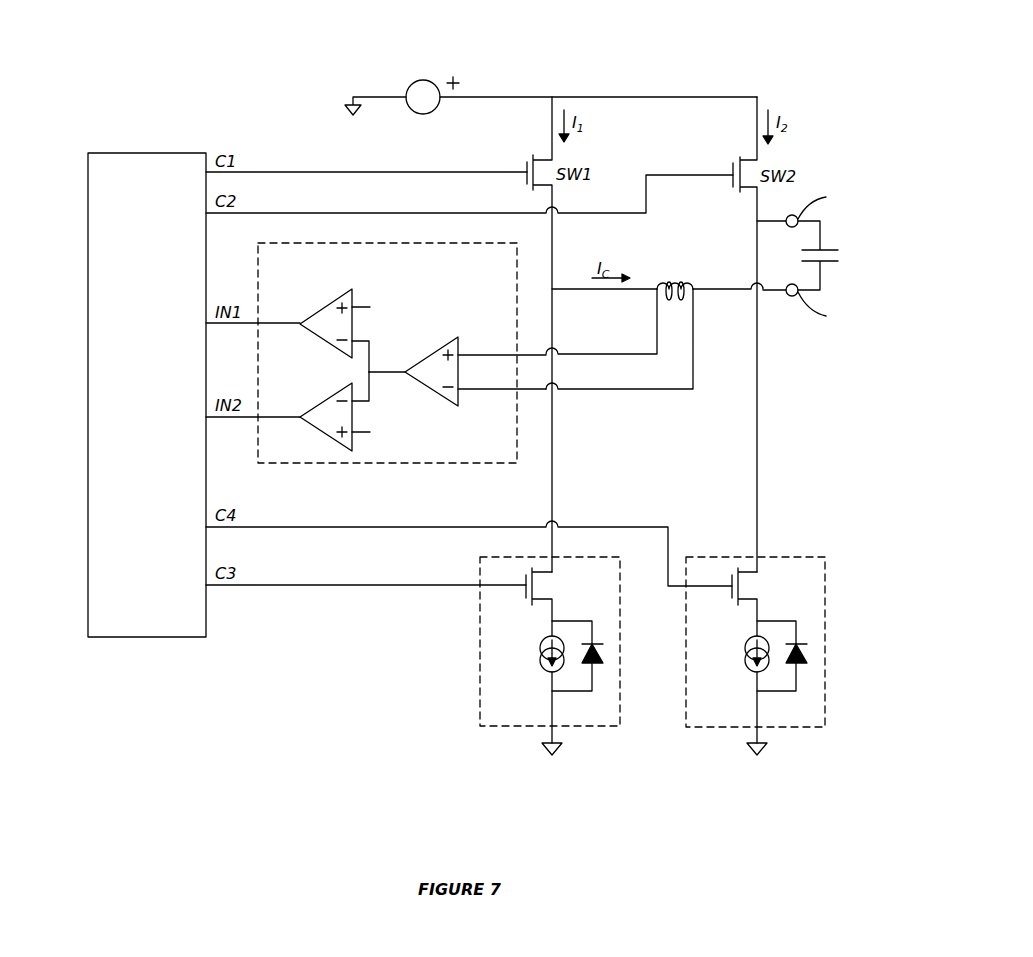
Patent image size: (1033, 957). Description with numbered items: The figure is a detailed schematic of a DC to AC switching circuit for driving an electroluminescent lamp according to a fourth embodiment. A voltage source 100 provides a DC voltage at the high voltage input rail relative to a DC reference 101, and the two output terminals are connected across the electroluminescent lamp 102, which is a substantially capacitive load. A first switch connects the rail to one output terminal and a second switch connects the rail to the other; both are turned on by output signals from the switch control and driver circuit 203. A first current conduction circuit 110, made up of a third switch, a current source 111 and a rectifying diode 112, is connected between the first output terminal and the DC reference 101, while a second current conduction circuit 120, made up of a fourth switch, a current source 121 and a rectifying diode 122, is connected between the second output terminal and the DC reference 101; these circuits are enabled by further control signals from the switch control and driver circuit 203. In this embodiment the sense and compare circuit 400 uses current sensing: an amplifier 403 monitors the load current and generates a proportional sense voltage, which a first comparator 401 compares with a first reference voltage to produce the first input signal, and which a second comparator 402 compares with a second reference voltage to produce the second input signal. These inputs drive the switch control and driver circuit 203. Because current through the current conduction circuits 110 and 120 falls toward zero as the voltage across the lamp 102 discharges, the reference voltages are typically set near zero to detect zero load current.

The voltage source 100 is at (415, 80).
The switch control and driver circuit 203 is at (88, 207).
The sense and compare circuit 400 is at (402, 369).
The first comparator 401 is at (318, 306).
The second comparator 402 is at (318, 402).
The amplifier 403 is at (455, 338).
The electroluminescent lamp 102 is at (838, 246).
The first current conduction circuit 110 is at (527, 650).
The current source 111 is at (530, 655).
The rectifying diode 112 is at (596, 666).
The second current conduction circuit 120 is at (781, 650).
The current source 121 is at (735, 655).
The rectifying diode 122 is at (800, 668).
The DC reference 101 is at (540, 745).